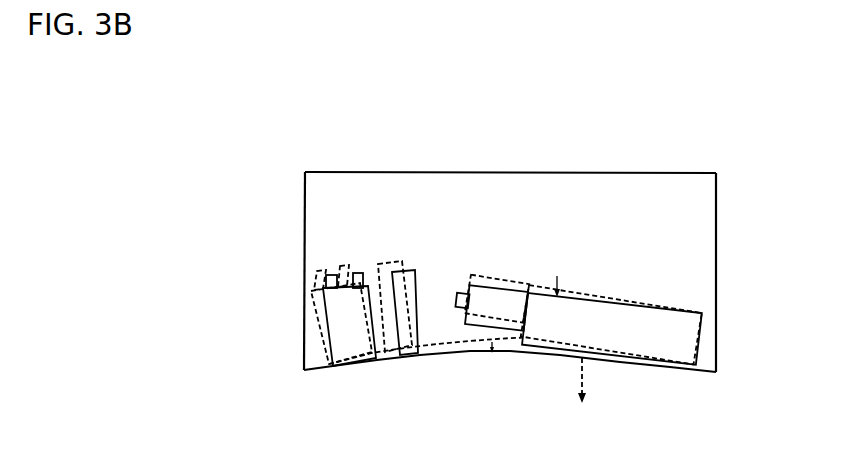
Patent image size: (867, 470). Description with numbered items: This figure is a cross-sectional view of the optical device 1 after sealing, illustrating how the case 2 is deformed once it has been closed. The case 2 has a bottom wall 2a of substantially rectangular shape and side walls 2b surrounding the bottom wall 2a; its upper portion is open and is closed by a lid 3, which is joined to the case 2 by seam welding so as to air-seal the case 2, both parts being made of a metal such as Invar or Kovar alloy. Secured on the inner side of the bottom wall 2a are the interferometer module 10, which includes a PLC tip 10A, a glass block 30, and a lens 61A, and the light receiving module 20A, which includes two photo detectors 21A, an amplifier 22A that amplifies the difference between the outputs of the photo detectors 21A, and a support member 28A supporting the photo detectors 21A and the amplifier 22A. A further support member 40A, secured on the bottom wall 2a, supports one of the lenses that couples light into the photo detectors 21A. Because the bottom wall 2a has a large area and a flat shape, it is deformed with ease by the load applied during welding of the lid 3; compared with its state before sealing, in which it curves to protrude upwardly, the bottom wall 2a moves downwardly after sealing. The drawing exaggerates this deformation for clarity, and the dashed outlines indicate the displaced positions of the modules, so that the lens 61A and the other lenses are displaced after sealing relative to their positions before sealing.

The optical device 1 is at (271, 187).
The case 2 is at (303, 297).
The bottom wall 2a is at (525, 353).
The side walls 2b is at (303, 328).
The lid 3 is at (405, 172).
The interferometer module 10 is at (563, 292).
The PLC tip 10A is at (645, 317).
The light receiving module 20A is at (376, 323).
The photo detectors 21A is at (358, 273).
The amplifier 22A is at (331, 275).
The support member 28A is at (343, 343).
The glass block 30 is at (503, 285).
The support member 40A is at (417, 312).
The lens 61A is at (462, 296).